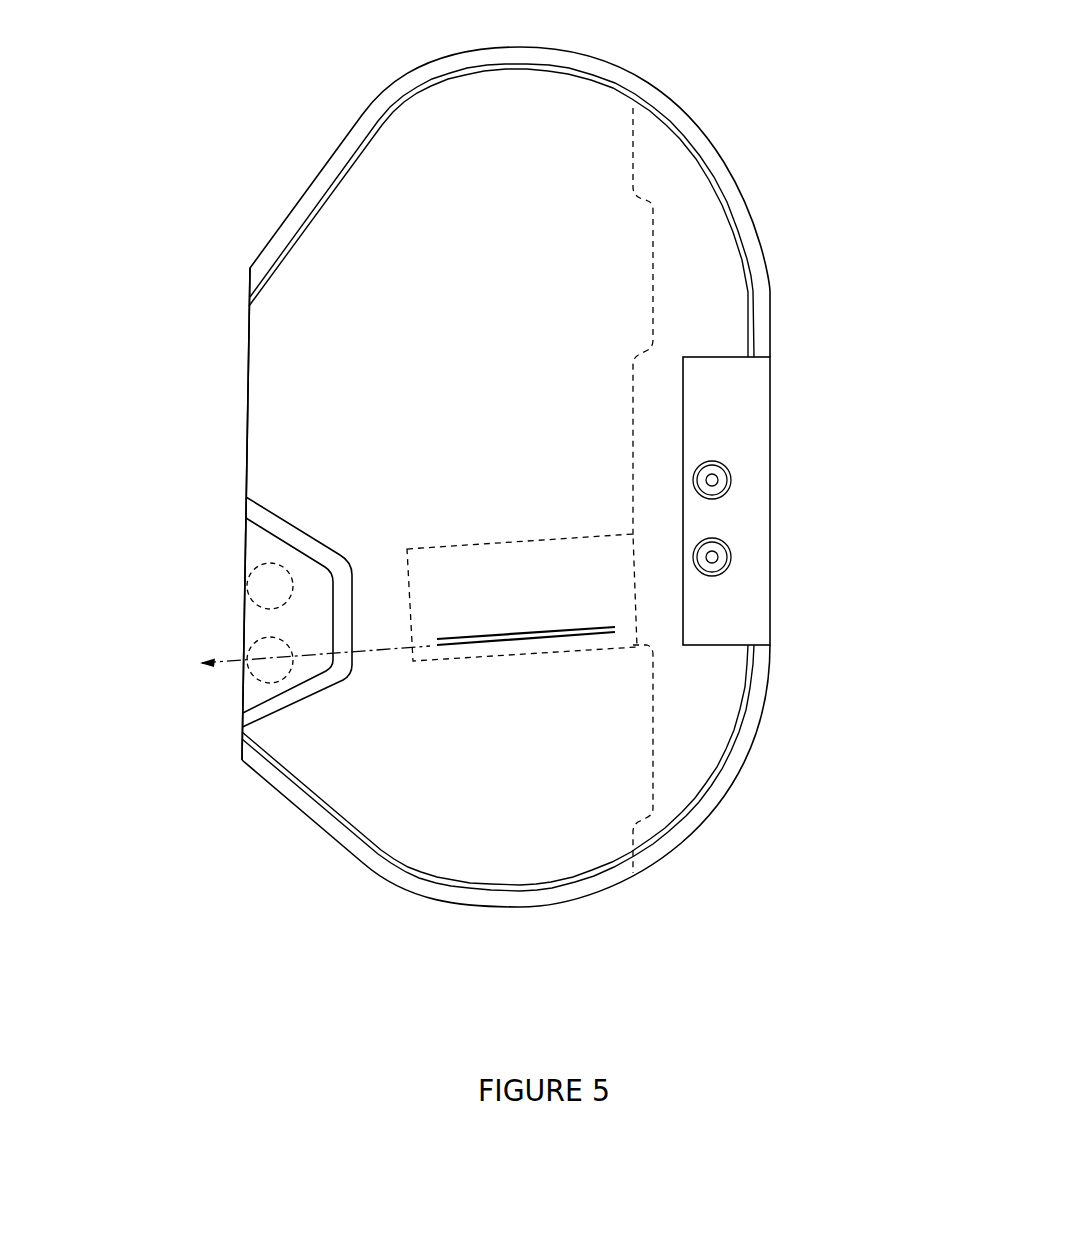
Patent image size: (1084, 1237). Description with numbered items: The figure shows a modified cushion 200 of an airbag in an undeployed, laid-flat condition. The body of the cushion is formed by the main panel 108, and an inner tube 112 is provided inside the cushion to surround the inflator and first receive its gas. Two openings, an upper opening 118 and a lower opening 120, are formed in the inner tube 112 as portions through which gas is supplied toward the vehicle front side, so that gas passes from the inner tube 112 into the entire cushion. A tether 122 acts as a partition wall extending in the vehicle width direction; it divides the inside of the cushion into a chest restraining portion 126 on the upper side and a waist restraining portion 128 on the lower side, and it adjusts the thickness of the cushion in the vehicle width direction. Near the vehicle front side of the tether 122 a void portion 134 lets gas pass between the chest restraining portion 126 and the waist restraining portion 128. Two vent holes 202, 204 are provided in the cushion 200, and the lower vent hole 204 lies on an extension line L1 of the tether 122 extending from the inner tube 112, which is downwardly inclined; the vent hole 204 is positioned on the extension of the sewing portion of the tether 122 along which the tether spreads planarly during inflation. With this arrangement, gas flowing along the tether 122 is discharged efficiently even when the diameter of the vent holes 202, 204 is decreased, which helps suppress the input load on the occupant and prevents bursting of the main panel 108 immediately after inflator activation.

The cushion 200 is at (252, 94).
The main panel 108 is at (270, 348).
The chest restraining portion 126 is at (353, 233).
The waist restraining portion 128 is at (488, 840).
The upper opening 118 is at (652, 320).
The inner tube 112 is at (633, 148).
The lower opening 120 is at (653, 752).
The tether 122 is at (510, 544).
The void portion 134 is at (375, 672).
The vent hole 202 is at (273, 565).
The vent hole 204 is at (257, 677).
The extension line L1 is at (230, 660).